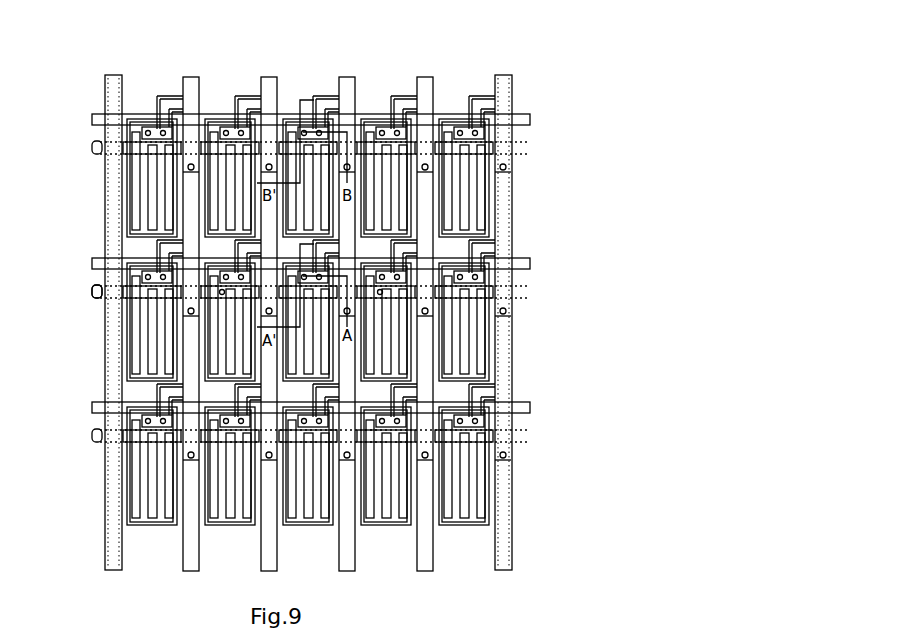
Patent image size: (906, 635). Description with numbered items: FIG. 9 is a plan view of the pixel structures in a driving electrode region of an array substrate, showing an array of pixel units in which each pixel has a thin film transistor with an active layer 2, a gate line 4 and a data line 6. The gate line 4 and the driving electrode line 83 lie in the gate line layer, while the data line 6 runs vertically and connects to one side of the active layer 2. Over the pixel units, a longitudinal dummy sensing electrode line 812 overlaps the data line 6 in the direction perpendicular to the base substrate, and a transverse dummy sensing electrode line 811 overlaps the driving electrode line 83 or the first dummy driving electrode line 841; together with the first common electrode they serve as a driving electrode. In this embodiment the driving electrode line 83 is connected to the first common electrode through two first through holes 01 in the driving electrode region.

The active layer 2 is at (193, 96).
The gate line 4 is at (92, 112).
The data line 6 is at (122, 75).
The longitudinal dummy sensing electrode line 812 is at (505, 73).
The transverse dummy sensing electrode line 811 is at (515, 140).
The driving electrode line 83 is at (92, 292).
The first dummy driving electrode line 841 is at (148, 152).
The first through hole 01 is at (222, 292).